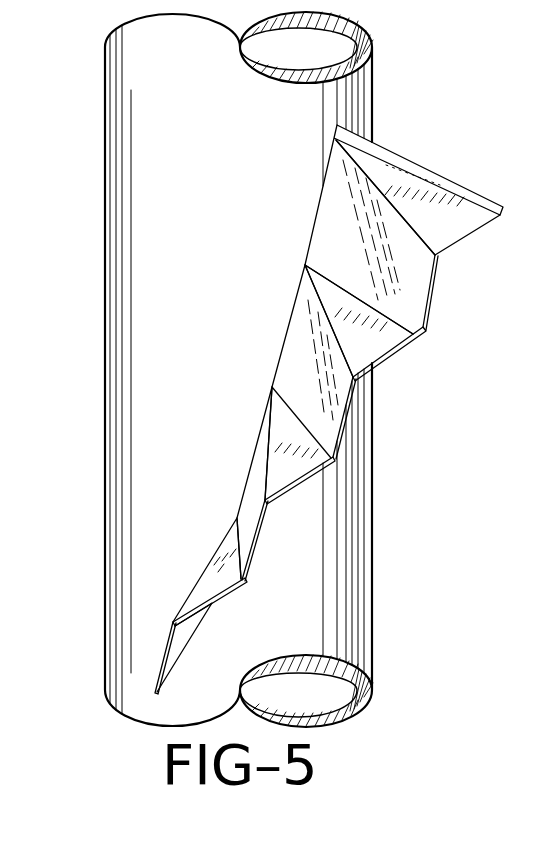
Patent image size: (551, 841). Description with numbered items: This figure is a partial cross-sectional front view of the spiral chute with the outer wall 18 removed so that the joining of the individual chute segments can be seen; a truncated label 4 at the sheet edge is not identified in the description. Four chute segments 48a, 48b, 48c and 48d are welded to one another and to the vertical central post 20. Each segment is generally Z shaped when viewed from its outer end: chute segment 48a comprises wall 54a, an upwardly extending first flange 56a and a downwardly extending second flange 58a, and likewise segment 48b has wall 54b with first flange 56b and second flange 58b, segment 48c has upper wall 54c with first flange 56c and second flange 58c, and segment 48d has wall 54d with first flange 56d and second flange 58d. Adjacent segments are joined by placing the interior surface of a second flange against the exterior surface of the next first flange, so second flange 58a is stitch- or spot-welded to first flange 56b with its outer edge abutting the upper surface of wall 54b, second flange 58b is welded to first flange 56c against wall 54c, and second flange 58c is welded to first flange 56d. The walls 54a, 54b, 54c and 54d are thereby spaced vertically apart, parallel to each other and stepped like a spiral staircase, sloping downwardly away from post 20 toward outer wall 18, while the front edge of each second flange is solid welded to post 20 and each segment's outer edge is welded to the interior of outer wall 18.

The central post 20 is at (104, 380).
The outer wall 18 is at (19, 269).
The device 4 is at (11, 172).
The wall 54a is at (383, 172).
The first flange 56a is at (443, 180).
The second flange 58a is at (335, 218).
The chute segment 48a is at (434, 275).
The wall 54b is at (337, 302).
The first flange 56b is at (424, 326).
The second flange 58b is at (300, 347).
The second chute segment 48b is at (388, 362).
The upper wall 54c is at (285, 432).
The first flange 56c is at (340, 450).
The second flange 58c is at (262, 527).
The third chute segment 48c is at (290, 492).
The wall 54d is at (212, 577).
The first flange 56d is at (251, 571).
The second flange 58d is at (163, 652).
The fourth chute segment 48d is at (180, 600).